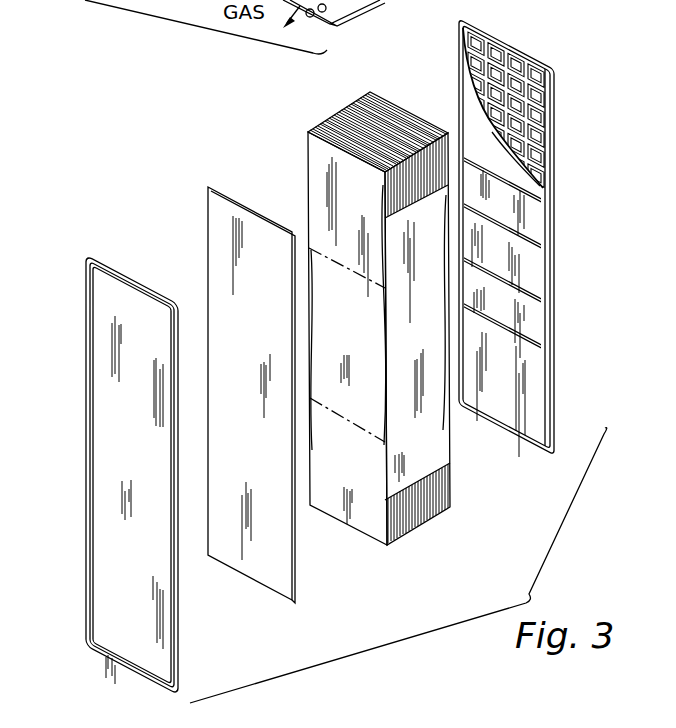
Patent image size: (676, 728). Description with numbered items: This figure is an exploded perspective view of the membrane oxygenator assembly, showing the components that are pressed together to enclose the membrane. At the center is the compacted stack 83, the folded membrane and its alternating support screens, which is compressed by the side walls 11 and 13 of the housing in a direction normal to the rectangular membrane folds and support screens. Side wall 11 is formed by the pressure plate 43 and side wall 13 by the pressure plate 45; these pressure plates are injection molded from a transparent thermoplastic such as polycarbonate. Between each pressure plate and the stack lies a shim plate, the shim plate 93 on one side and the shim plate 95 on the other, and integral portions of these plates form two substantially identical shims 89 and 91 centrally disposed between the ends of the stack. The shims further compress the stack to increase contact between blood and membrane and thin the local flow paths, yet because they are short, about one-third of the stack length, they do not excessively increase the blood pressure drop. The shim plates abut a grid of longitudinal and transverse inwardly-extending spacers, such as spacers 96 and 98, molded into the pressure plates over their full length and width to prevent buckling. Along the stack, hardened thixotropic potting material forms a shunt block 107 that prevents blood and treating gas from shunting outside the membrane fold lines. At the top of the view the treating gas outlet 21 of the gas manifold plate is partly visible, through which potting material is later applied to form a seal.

The side wall 11 is at (100, 582).
The pressure plate 43 is at (105, 490).
The shim plate 93 is at (277, 540).
The compacted stack 83 is at (374, 318).
The shim 89 is at (297, 425).
The shunt block 107 is at (432, 427).
The side wall 13 is at (544, 230).
The pressure plate 45 is at (553, 232).
The shim 91 is at (525, 268).
The shim plate 95 is at (527, 372).
The spacer 96 is at (519, 78).
The spacer 98 is at (520, 98).
The treating gas outlet 21 is at (345, 24).